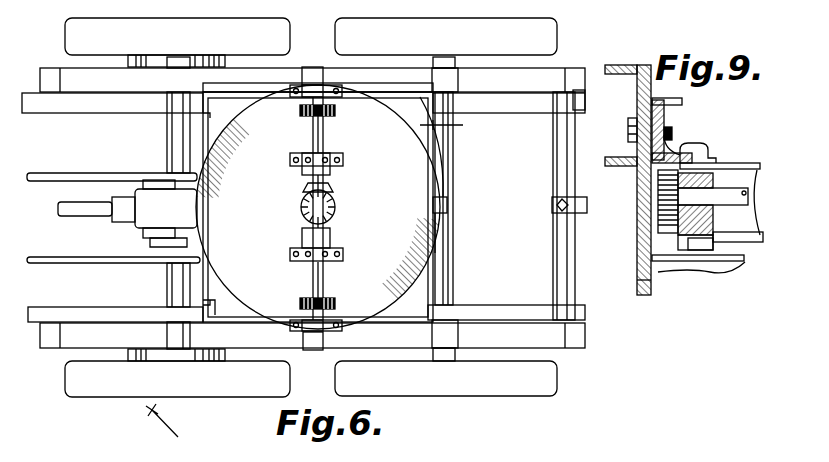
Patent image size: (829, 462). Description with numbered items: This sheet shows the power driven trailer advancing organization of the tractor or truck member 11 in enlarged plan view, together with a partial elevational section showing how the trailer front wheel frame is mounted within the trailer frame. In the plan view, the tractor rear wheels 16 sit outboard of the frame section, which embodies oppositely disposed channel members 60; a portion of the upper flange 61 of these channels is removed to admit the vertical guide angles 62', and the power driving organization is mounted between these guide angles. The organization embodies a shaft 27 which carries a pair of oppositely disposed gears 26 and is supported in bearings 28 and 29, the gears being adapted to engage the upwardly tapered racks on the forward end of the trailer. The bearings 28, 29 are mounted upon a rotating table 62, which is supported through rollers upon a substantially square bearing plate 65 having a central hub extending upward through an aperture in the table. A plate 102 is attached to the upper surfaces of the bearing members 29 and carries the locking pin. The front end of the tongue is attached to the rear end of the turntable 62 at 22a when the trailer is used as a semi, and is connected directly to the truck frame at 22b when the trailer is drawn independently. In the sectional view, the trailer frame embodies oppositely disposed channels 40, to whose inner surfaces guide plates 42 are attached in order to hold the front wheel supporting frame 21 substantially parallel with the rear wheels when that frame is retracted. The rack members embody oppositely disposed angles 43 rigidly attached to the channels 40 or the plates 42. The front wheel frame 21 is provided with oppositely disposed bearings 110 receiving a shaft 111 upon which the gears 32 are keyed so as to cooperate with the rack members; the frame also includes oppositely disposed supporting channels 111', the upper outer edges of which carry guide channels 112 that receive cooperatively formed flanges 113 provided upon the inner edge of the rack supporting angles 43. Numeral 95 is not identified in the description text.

In FIG. 6, the truck or tractor member 11 is at (172, 427).
In FIG. 6, the rear wheels 16 is at (548, 390).
In FIG. 9, the front wheel supporting frame 21 is at (722, 262).
In FIG. 6, the tongue attachment point on turntable 22a is at (446, 211).
In FIG. 6, the tongue connection point on truck frame 22b is at (582, 215).
In FIG. 6, the gears 26 is at (337, 112).
In FIG. 6, the shaft 27 is at (325, 137).
In FIG. 6, the bearings 28 is at (295, 320).
In FIG. 6, the bearings 29 is at (291, 160).
In FIG. 9, the gears 32 is at (659, 222).
In FIG. 9, the channels 40 is at (625, 74).
In FIG. 9, the guide plates 42 is at (646, 256).
In FIG. 9, the angles 43 is at (668, 125).
In FIG. 6, the channel members 60 is at (527, 100).
In FIG. 6, the upper flange 61 is at (503, 115).
In FIG. 6, the rotating table 62 is at (458, 204).
In FIG. 6, the vertical guide angles 62' is at (323, 206).
In FIG. 6, the bearing plate 65 is at (452, 128).
In FIG. 6, the turntable frame 95 is at (263, 85).
In FIG. 6, the plate 102 is at (326, 172).
In FIG. 9, the bearings 110 is at (709, 218).
In FIG. 9, the shaft 111 is at (736, 197).
In FIG. 9, the supporting channels 111' is at (739, 202).
In FIG. 9, the guide channels 112 is at (700, 152).
In FIG. 9, the flanges 113 is at (683, 153).